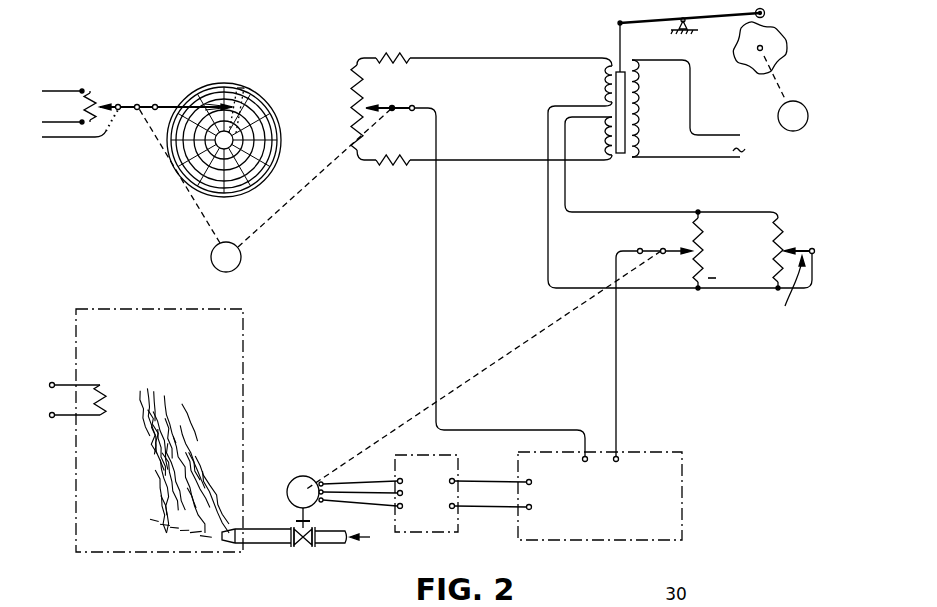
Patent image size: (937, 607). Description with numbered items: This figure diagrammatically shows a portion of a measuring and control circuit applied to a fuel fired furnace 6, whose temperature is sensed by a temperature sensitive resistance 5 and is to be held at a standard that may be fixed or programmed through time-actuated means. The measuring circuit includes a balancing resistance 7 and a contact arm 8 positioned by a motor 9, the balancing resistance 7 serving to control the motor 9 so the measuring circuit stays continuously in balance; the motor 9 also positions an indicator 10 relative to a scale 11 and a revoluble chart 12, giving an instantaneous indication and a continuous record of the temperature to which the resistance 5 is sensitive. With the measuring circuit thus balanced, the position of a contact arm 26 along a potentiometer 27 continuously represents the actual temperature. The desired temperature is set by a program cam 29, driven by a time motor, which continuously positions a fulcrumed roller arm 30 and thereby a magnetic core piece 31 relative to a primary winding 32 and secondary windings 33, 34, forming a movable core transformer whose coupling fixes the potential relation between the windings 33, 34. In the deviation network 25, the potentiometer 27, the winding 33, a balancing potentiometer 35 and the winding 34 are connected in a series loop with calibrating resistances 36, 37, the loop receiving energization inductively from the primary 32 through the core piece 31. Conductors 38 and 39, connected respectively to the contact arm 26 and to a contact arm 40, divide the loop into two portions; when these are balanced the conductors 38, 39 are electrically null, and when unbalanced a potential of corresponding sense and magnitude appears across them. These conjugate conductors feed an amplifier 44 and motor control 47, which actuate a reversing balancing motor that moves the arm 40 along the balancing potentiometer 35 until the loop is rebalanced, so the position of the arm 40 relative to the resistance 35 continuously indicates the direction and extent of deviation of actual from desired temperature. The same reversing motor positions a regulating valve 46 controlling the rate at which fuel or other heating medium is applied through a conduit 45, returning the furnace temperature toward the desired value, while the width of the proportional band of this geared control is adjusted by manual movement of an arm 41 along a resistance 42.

The temperature sensitive resistance 5 is at (84, 400).
The furnace 6 is at (175, 364).
The balancing resistance 7 is at (80, 113).
The contact arm 8 is at (112, 100).
The motor 9 is at (211, 255).
The indicator 10 is at (206, 96).
The scale 11 is at (245, 97).
The revoluble chart 12 is at (281, 141).
The deviation network 25 is at (501, 116).
The contact arm 26 is at (383, 108).
The potentiometer 27 is at (350, 89).
The program cam 29 is at (746, 82).
The fulcrumed roller arm 30 is at (733, 19).
The magnetic core piece 31 is at (614, 56).
The primary winding 32 is at (688, 108).
The secondary winding 33 is at (592, 84).
The secondary winding 34 is at (592, 136).
The balancing potentiometer 35 is at (691, 247).
The calibrating resistance 36 is at (390, 55).
The calibrating resistance 37 is at (392, 168).
The conductor 38 is at (438, 219).
The conductor 39 is at (617, 358).
The contact arm 40 is at (647, 249).
The arm 41 is at (803, 253).
The resistance 42 is at (772, 241).
The amplifier 44 is at (600, 496).
The conduit 45 is at (267, 544).
The regulating valve 46 is at (312, 546).
The motor control 47 is at (424, 493).